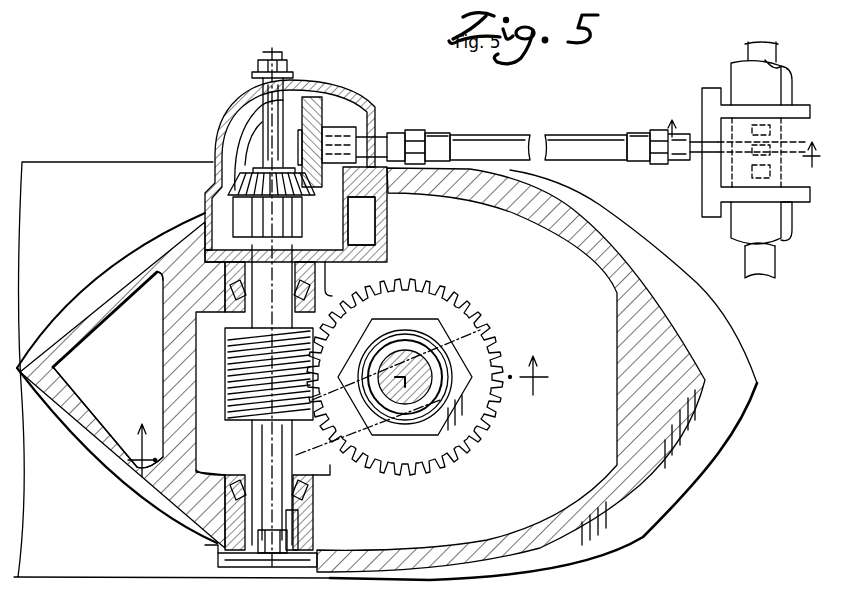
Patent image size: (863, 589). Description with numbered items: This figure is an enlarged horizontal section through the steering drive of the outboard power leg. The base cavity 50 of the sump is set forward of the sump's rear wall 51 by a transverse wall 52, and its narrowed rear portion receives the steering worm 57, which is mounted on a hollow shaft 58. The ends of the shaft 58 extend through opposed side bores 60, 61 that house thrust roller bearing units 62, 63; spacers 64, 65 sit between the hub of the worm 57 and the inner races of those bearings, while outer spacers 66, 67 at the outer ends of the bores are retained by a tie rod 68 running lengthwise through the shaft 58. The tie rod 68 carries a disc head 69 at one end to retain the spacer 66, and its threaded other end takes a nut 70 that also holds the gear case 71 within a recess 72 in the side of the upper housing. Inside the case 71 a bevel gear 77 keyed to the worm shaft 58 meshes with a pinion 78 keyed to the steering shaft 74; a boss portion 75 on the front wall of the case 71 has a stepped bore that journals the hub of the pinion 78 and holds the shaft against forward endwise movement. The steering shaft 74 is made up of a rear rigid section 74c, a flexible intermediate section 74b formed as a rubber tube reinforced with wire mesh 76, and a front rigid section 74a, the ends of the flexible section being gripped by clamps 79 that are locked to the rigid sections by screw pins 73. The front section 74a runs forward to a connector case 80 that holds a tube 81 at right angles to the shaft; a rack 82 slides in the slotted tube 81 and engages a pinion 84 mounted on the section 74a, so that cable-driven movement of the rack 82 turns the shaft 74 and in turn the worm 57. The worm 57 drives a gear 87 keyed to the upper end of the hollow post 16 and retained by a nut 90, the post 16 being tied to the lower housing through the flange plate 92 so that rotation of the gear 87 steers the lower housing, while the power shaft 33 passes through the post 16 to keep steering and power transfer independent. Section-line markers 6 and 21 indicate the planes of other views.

The flange plate 92 is at (76, 165).
The base cavity 50 is at (497, 515).
The thrust roller bearing unit 63 is at (178, 507).
The rear wall 51 is at (172, 392).
The side bore 60 is at (166, 290).
The thrust roller bearing unit 62 is at (163, 302).
The spacer 64 is at (230, 330).
The gear case 71 is at (214, 125).
The tie rod 68 is at (228, 106).
The recess 72 is at (372, 244).
The boss portion 75 is at (352, 190).
The spacer 66 is at (341, 279).
The nut 70 is at (262, 62).
The pinion 78 is at (303, 88).
The bevel gear 77 is at (228, 182).
The rear rigid section 74c is at (378, 140).
The screw pins 73 is at (405, 130).
The clamps 79 is at (437, 132).
The wire mesh 76 is at (514, 132).
The intermediate section 74b is at (595, 135).
The steering shaft 74 is at (558, 128).
The front section 74a is at (697, 140).
The section line 21 is at (743, 135).
The connector case 80 is at (740, 178).
The pinion 84 is at (754, 108).
The tube 81 is at (740, 230).
The rack 82 is at (770, 282).
The nut 90 is at (432, 312).
The gear 87 is at (465, 335).
The hollow post 16 is at (445, 368).
The shaft 33 is at (393, 352).
The steering worm 57 is at (230, 385).
The spacer 65 is at (240, 430).
The hollow shaft 58 is at (310, 468).
The transverse wall 52 is at (315, 503).
The spacer 67 is at (300, 523).
The side bore 61 is at (218, 547).
The disc head 69 is at (228, 562).
The section line 6- 6 is at (338, 416).